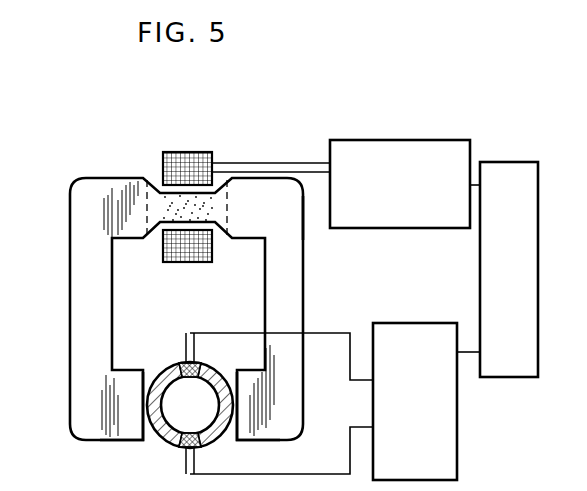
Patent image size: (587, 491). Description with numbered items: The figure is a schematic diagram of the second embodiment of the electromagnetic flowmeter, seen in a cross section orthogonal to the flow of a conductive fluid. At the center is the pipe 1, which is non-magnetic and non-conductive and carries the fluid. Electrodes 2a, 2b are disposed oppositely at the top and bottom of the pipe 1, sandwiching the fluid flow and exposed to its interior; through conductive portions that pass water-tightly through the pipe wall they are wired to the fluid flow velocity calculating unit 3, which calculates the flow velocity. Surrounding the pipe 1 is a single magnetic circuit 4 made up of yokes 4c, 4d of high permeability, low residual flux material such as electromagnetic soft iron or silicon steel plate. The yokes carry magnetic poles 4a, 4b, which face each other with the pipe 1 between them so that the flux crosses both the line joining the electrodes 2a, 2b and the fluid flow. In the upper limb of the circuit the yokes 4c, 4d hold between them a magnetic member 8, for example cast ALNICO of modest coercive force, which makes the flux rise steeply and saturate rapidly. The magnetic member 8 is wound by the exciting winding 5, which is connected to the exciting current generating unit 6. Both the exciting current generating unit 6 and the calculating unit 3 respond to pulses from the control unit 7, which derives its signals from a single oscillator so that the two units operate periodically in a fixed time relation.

The pipe 1 is at (226, 436).
The electrode 2a is at (184, 364).
The electrode 2b is at (186, 450).
The fluid flow velocity calculating unit 3 is at (402, 323).
The magnetic circuit 4 is at (57, 112).
The magnetic pole 4a is at (146, 428).
The magnetic pole 4b is at (235, 430).
The yoke 4c is at (70, 208).
The yoke 4d is at (303, 200).
The exciting winding 5 is at (196, 266).
The exciting current generating unit 6 is at (425, 140).
The control unit 7 is at (480, 276).
The magnetic member 8 is at (212, 208).